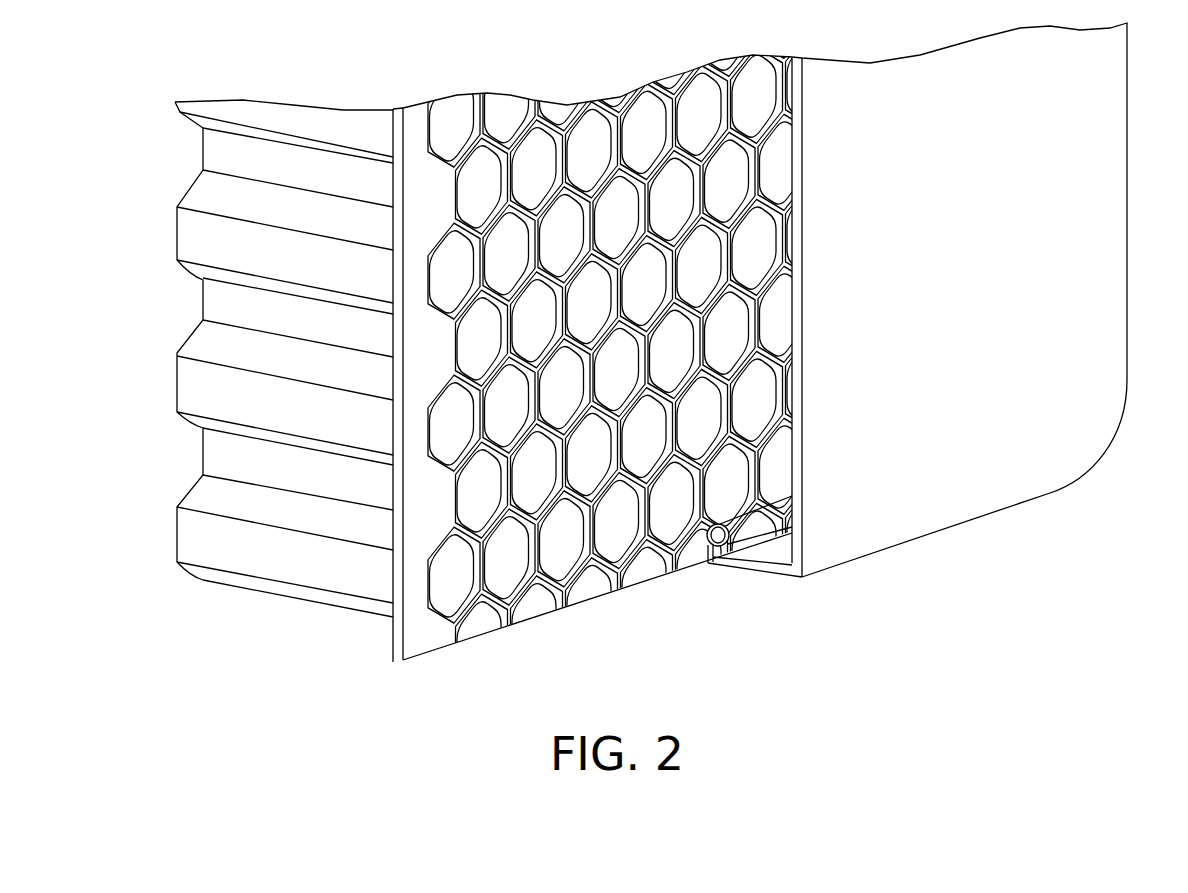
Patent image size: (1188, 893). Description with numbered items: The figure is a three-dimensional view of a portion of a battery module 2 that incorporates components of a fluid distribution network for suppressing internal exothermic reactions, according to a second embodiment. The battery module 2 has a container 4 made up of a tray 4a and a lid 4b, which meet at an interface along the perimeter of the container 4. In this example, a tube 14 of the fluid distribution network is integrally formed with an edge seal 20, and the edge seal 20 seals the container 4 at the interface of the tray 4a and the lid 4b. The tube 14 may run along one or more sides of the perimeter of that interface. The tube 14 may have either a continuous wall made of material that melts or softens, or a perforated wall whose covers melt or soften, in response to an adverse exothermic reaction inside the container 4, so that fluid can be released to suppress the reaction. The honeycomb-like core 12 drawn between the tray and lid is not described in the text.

The battery module 2 is at (958, 545).
The container 4 is at (386, 666).
The tray 4a is at (250, 590).
The lid 4b is at (1097, 455).
The honeycomb core 12 is at (553, 565).
The tube 14 is at (757, 540).
The edge seal 20 is at (706, 553).